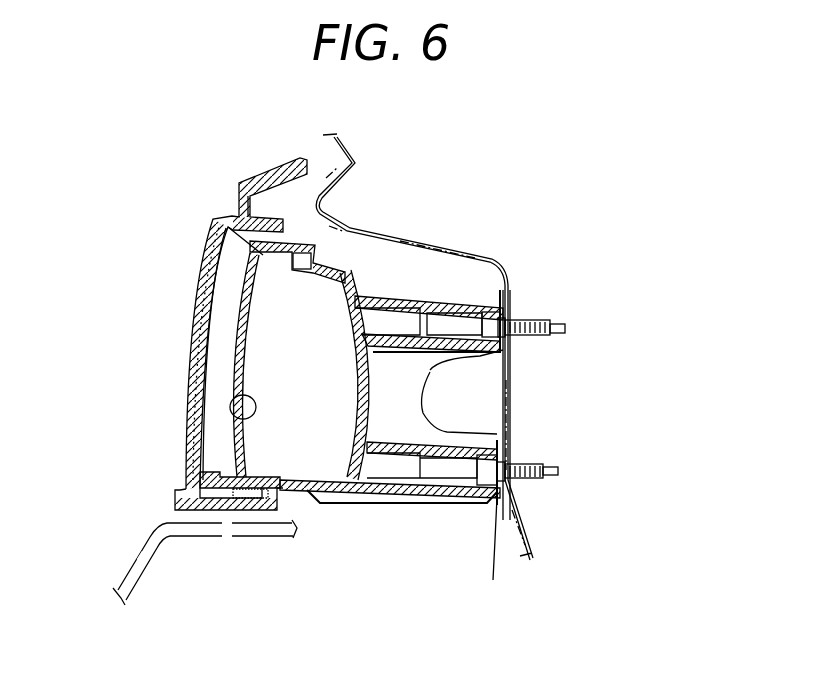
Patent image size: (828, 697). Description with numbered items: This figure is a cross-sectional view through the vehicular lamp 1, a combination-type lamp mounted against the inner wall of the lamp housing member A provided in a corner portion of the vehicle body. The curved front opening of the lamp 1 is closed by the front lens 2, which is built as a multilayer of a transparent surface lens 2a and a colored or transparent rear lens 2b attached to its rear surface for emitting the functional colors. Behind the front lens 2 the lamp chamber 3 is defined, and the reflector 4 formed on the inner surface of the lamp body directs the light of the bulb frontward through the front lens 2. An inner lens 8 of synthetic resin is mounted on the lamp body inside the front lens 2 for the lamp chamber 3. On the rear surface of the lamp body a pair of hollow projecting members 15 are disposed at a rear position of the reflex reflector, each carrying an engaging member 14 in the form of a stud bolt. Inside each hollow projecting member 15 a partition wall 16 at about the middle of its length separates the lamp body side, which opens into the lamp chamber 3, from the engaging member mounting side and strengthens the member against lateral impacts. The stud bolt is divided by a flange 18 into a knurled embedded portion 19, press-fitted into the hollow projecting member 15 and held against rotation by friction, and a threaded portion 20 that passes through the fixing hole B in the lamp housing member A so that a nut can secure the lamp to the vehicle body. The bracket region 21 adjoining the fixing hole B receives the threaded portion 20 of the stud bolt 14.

The vehicular lamp 1 is at (365, 288).
The front lens 2 is at (130, 255).
The surface lens 2a is at (192, 313).
The rear lens 2b is at (203, 281).
The lamp chamber 3 is at (247, 373).
The reflector 4 is at (367, 393).
The inner lens 8 is at (247, 413).
The engaging member 14 is at (543, 322).
The hollow projecting member 15 is at (415, 305).
The partition wall 16 is at (455, 315).
The flange 18 is at (479, 552).
The embedded portion 19 is at (485, 338).
The threaded portion 20 is at (528, 335).
The mounting bracket 21 is at (515, 292).
The lamp housing member A is at (350, 248).
The fixing hole B is at (513, 300).